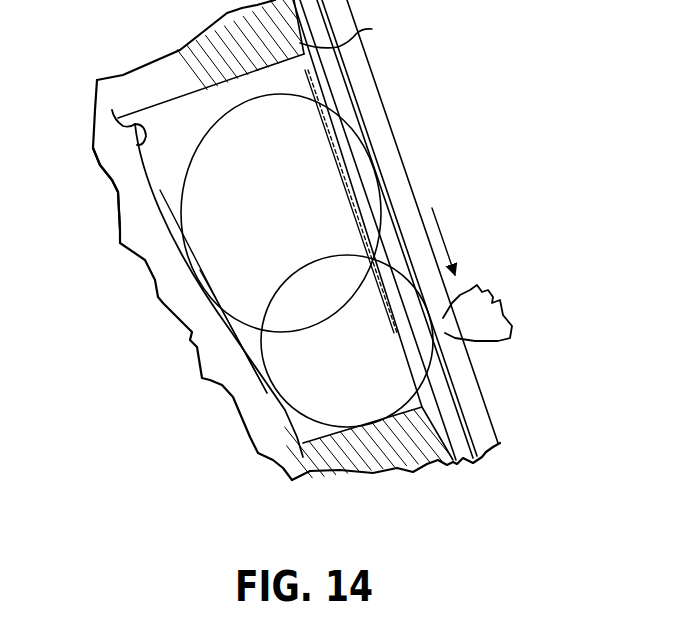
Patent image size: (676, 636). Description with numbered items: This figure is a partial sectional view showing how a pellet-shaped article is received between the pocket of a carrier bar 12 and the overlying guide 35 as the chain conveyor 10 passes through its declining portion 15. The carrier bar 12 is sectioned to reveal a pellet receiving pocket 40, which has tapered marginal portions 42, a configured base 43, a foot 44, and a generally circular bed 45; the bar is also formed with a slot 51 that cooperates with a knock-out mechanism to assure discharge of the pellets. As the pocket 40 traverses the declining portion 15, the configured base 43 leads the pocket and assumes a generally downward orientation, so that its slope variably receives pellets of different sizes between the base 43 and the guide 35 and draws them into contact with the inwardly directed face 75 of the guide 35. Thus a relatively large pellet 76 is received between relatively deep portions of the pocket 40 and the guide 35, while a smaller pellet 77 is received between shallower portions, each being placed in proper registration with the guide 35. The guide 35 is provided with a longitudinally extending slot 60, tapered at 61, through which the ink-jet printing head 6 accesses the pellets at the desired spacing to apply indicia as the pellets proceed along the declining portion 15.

The printing head 6 is at (478, 288).
The chain conveyor 10 is at (154, 309).
The carrier bar 12 is at (398, 458).
The declining portion 15 is at (482, 134).
The guide 35 is at (376, 81).
The pellet receiving pocket 40 is at (166, 181).
The tapered marginal portion 42 is at (513, 407).
The configured base 43 is at (222, 342).
The foot 44 is at (183, 98).
The bed 45 is at (112, 110).
The slot 51 is at (133, 237).
The slot 60 is at (390, 208).
The taper 61 is at (387, 147).
The inwardly directed face 75 is at (438, 370).
The pellet 76 is at (275, 201).
The pellet 77 is at (360, 366).